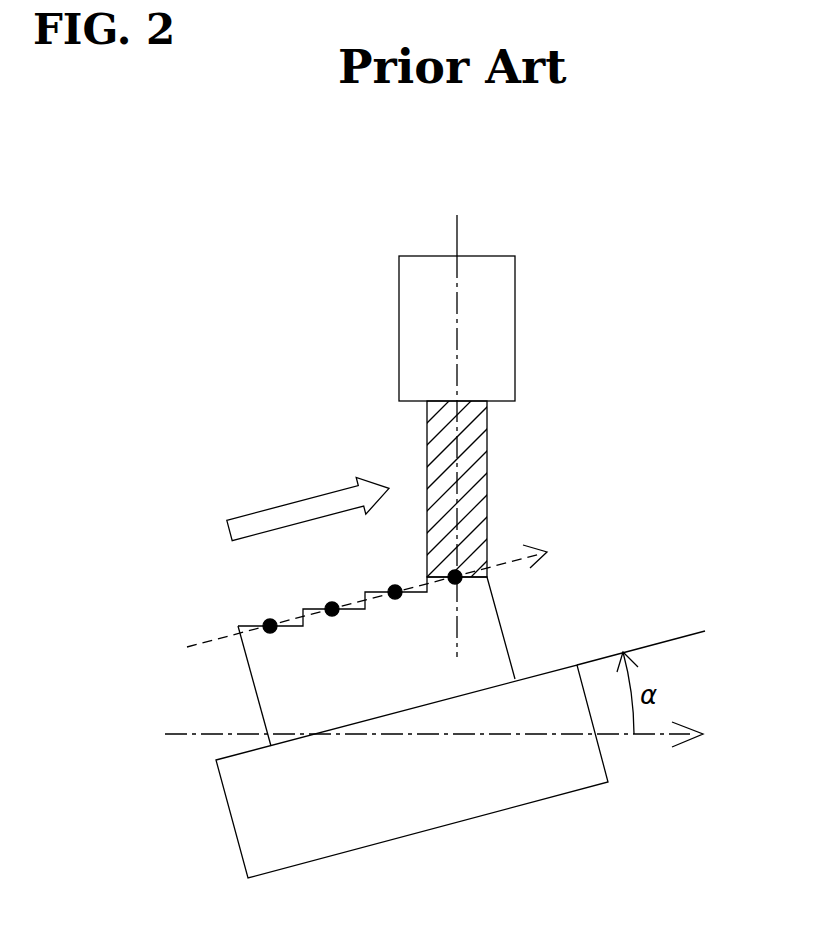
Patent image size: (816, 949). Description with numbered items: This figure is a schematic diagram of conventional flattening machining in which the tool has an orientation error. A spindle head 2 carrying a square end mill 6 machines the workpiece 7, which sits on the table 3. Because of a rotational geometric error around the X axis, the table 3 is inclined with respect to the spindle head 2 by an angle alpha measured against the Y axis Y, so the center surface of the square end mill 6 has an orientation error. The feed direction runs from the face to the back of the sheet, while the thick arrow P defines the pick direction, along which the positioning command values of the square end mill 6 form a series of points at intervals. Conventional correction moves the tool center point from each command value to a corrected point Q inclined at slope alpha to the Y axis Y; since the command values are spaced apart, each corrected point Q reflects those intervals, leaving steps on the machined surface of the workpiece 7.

The spindle head 2 is at (500, 305).
The table 3 is at (428, 816).
The square end mill 6 is at (487, 438).
The workpiece 7 is at (275, 690).
The thick arrow (pick direction) P is at (290, 503).
The corrected point Q is at (327, 605).
The Y axis Y is at (454, 737).